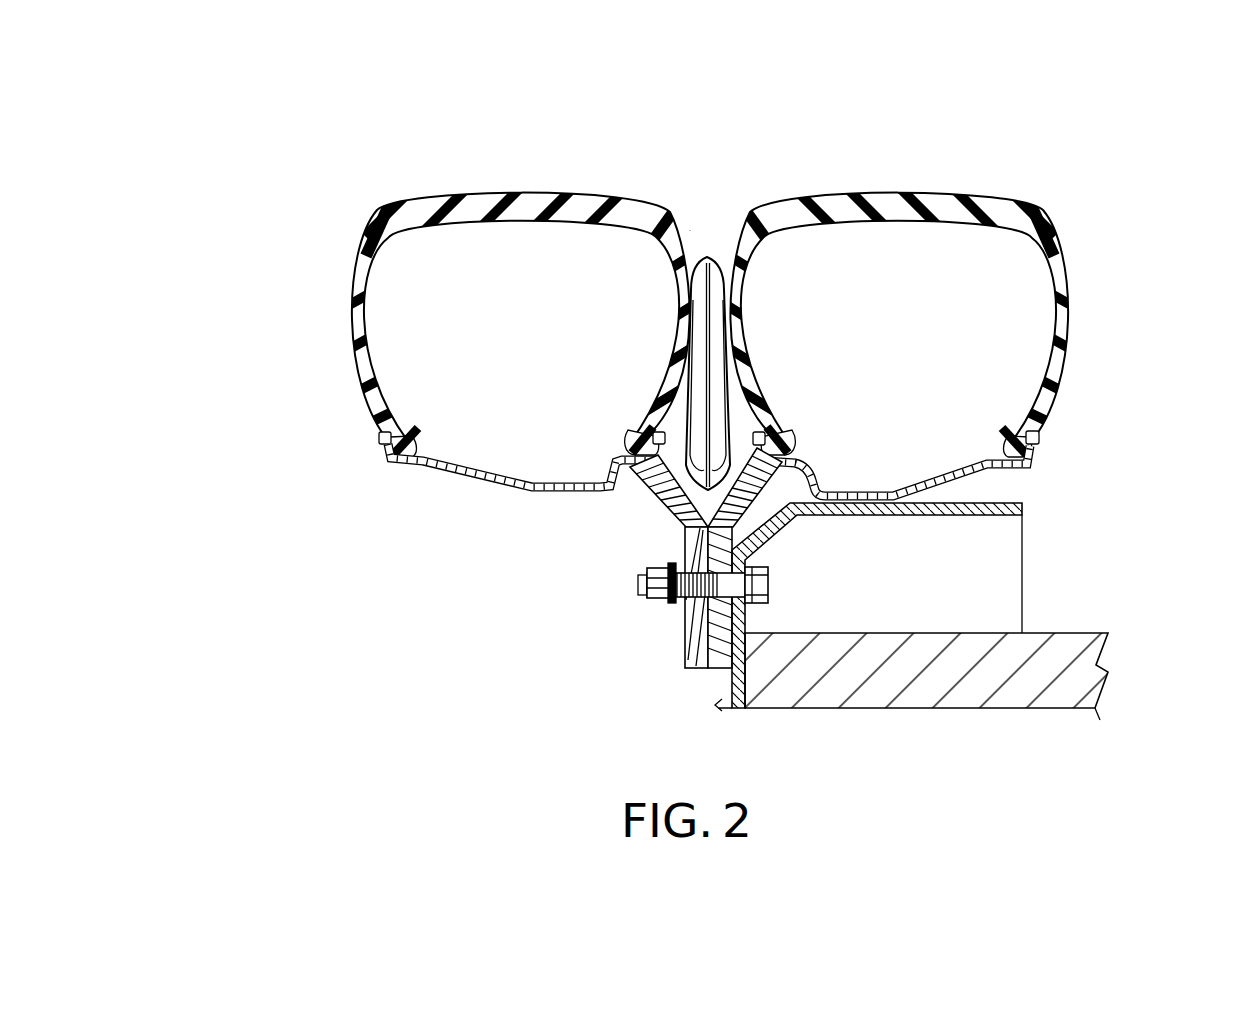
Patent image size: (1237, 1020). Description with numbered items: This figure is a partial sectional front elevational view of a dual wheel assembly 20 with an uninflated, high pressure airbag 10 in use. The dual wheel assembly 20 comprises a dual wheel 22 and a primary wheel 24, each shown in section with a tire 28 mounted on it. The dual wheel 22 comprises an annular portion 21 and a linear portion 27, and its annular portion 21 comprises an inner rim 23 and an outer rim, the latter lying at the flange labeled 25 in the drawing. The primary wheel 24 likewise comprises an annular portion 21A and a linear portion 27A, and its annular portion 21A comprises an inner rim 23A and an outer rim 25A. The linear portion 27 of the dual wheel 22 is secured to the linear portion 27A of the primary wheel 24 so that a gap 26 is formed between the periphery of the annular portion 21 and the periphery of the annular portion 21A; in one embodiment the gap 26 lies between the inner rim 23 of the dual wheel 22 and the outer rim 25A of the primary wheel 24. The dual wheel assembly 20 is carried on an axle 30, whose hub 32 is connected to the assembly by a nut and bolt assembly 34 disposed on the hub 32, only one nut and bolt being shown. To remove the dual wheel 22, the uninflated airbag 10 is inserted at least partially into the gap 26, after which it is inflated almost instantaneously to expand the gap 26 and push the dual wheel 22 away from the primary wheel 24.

The high pressure airbag 10 is at (703, 262).
The dual wheel assembly 20 is at (1000, 145).
The annular portion 21 is at (392, 464).
The annular portion 21A is at (1028, 462).
The dual wheel 22 is at (280, 526).
The inner rim 23 is at (657, 432).
The inner rim 23A is at (1040, 432).
The primary wheel 24 is at (1120, 300).
The rim flange 25 is at (380, 436).
The outer rim 25A is at (770, 435).
The gap 26 is at (680, 207).
The linear portion 27 is at (685, 652).
The linear portion 27A is at (722, 668).
The tire 28 is at (475, 190).
The axle 30 is at (915, 632).
The hub 32 is at (884, 517).
The nut and bolt assembly 34 is at (645, 597).